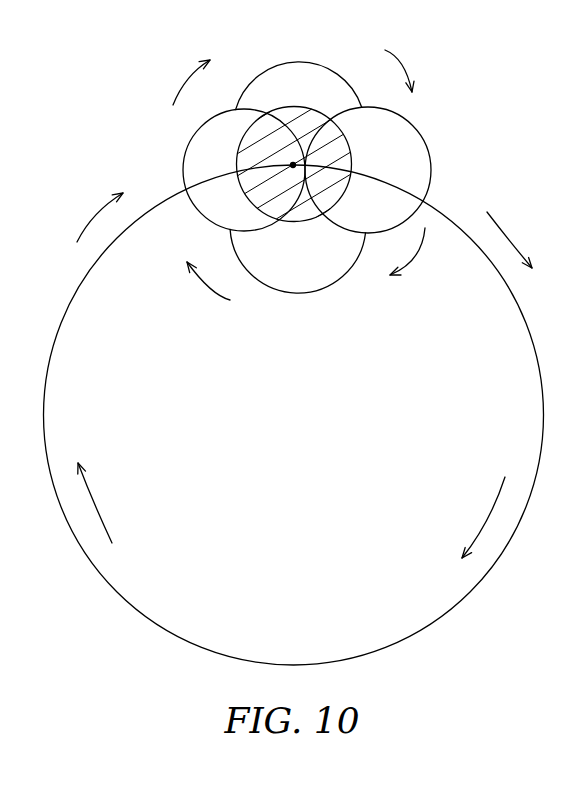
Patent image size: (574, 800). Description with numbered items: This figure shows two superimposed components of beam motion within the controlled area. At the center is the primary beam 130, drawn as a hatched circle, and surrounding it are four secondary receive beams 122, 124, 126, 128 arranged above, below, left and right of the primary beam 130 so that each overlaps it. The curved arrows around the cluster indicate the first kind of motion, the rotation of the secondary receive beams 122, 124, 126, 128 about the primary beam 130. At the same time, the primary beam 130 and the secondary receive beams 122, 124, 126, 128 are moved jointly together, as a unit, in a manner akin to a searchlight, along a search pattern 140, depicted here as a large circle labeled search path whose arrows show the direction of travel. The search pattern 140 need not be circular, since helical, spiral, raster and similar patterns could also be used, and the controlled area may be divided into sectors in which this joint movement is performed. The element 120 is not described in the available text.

The field of view (beam footprint) 120 is at (304, 200).
The secondary receive beam 122 is at (298, 62).
The secondary receive beam 124 is at (297, 295).
The secondary receive beam 126 is at (432, 168).
The secondary receive beam 128 is at (186, 151).
The primary beam 130 is at (293, 165).
The search pattern 140 is at (178, 638).